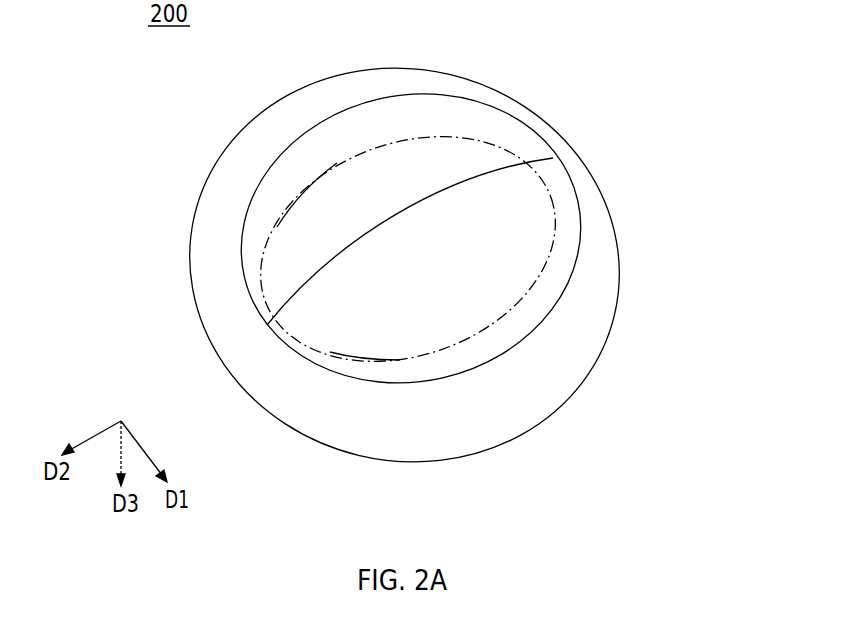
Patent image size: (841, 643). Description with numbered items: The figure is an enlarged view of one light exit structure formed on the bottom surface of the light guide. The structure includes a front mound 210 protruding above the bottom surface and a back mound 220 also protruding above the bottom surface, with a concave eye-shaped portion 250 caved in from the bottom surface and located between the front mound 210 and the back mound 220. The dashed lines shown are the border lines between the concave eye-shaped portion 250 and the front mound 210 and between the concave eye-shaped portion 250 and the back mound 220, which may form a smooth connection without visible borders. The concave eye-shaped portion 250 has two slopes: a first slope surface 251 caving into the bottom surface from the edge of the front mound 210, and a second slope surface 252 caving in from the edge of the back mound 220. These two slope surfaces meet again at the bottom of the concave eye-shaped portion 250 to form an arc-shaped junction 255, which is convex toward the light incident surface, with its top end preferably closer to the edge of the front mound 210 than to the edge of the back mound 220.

The front mound 210 is at (212, 213).
The back mound 220 is at (603, 325).
The concave eye-shaped portion 250 is at (471, 217).
The first slope surface 251 is at (332, 183).
The second slope surface 252 is at (362, 343).
The arc-shaped junction 255 is at (363, 240).